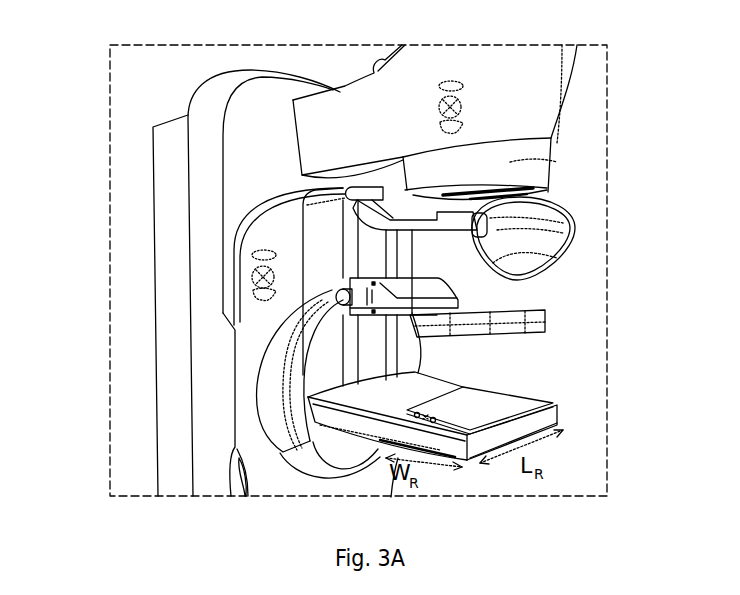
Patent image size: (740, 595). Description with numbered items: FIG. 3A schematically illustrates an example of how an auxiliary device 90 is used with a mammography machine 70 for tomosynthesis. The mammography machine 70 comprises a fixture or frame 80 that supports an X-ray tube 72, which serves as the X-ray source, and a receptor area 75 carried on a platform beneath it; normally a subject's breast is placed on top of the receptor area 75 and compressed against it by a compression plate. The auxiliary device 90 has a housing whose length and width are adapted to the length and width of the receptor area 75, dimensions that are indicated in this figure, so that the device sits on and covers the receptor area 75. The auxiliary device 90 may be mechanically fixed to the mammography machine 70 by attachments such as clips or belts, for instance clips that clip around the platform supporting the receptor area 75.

The mammography machine 70 is at (139, 389).
The X-ray tube 72 is at (550, 168).
The fixture or frame 80 is at (272, 406).
The auxiliary device 90 is at (508, 402).
The receptor area 75 is at (447, 447).